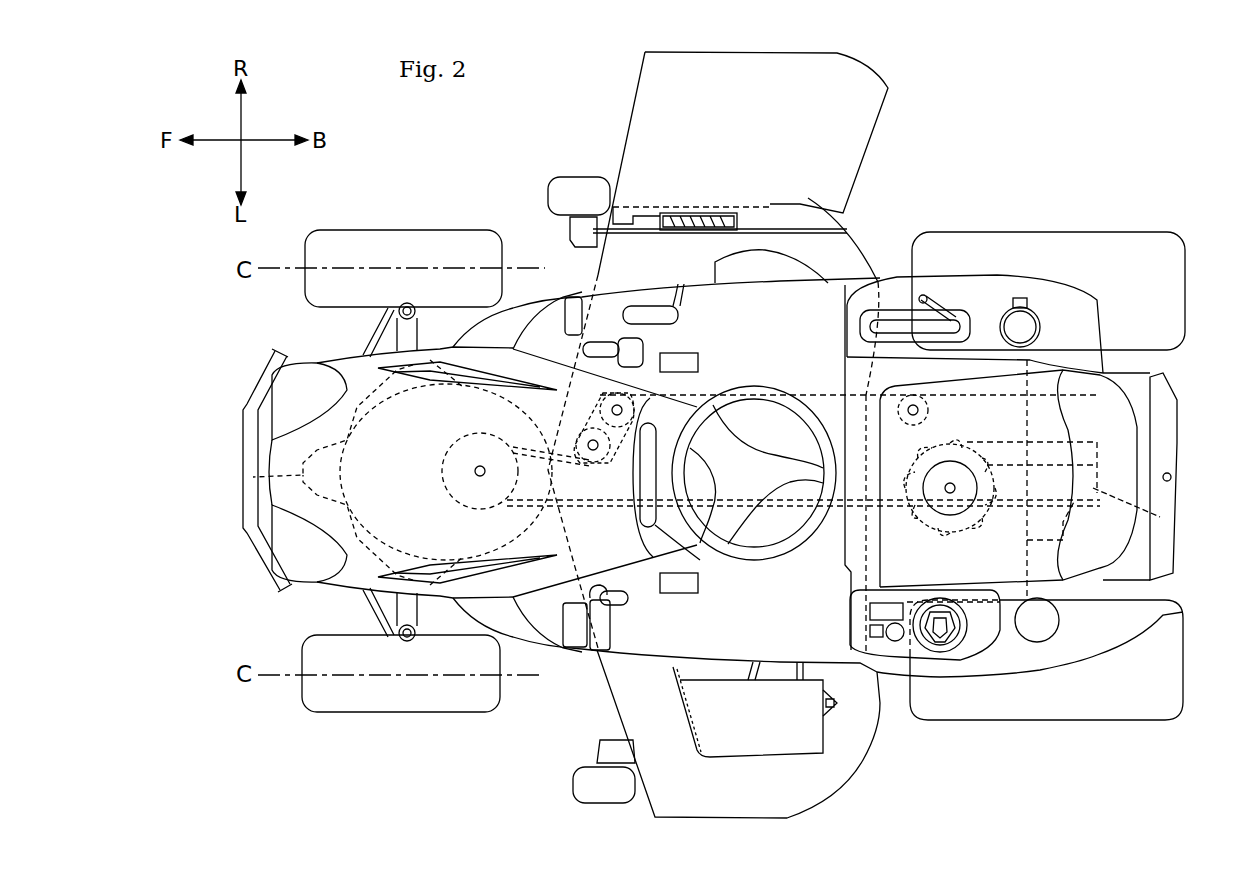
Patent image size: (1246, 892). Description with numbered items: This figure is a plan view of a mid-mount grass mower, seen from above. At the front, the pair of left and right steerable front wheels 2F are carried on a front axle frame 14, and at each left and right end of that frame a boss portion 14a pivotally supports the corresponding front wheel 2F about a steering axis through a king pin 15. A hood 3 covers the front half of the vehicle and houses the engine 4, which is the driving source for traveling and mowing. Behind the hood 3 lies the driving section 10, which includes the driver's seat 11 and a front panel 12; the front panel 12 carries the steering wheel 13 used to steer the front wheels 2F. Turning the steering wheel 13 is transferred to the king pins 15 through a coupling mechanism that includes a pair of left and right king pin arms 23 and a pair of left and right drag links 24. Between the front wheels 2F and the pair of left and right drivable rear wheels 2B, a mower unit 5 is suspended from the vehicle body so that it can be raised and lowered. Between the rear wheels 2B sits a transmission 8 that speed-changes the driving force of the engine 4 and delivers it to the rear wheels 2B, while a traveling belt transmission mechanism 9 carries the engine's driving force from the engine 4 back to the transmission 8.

The front wheels 2F is at (396, 237).
The rear wheels 2B is at (1041, 242).
The hood 3 is at (334, 360).
The engine 4 is at (252, 468).
The mower unit 5 is at (610, 706).
The transmission 8 is at (1093, 488).
The traveling belt transmission mechanism 9 is at (810, 393).
The driving section 10 is at (792, 312).
The driver's seat 11 is at (1127, 427).
The front panel 12 is at (680, 533).
The steering wheel 13 is at (752, 386).
The front axle frame 14 is at (373, 597).
The boss portion 14a is at (403, 304).
The king pin 15 is at (412, 303).
The king pin arms 23 is at (372, 337).
The drag links 24 is at (940, 465).